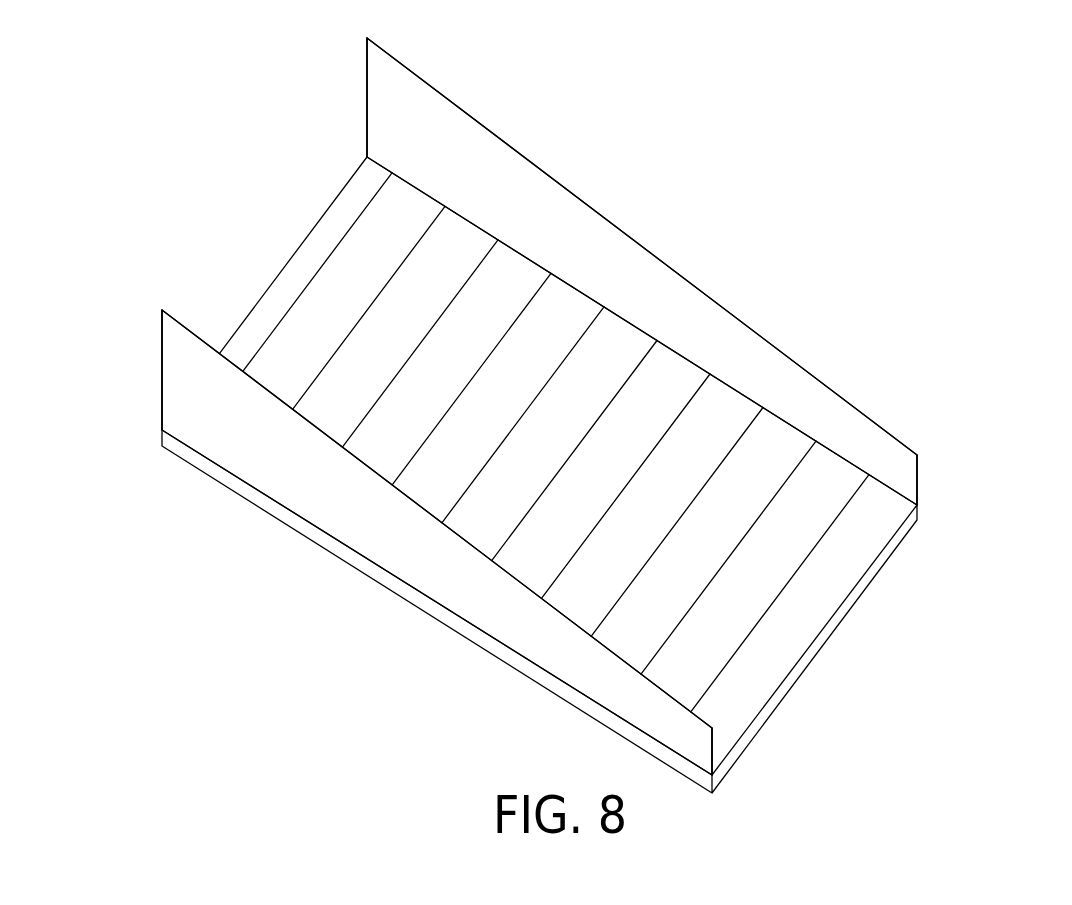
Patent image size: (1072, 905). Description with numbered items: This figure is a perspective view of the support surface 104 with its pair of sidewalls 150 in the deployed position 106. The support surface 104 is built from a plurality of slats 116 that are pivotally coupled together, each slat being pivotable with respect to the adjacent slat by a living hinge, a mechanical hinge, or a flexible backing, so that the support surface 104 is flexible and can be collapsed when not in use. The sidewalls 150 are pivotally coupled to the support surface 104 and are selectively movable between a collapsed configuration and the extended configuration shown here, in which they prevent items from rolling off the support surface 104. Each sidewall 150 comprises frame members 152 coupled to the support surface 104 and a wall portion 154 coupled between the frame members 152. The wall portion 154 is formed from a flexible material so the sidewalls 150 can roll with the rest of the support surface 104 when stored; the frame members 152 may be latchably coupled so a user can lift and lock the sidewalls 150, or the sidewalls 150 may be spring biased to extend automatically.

The support surface 104 is at (820, 124).
The deployed position 106 is at (822, 214).
The slats 116 is at (530, 555).
The sidewalls 150 is at (566, 144).
The frame members 152 is at (367, 97).
The wall portion 154 is at (644, 272).